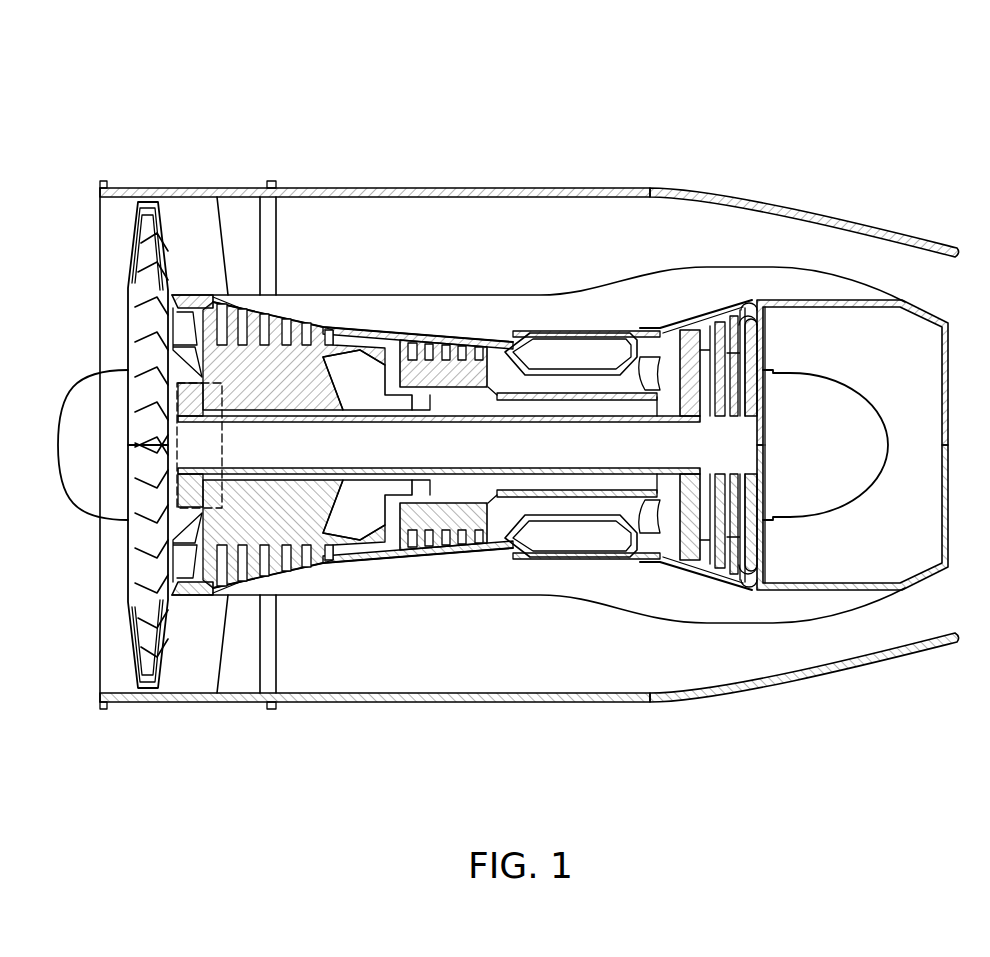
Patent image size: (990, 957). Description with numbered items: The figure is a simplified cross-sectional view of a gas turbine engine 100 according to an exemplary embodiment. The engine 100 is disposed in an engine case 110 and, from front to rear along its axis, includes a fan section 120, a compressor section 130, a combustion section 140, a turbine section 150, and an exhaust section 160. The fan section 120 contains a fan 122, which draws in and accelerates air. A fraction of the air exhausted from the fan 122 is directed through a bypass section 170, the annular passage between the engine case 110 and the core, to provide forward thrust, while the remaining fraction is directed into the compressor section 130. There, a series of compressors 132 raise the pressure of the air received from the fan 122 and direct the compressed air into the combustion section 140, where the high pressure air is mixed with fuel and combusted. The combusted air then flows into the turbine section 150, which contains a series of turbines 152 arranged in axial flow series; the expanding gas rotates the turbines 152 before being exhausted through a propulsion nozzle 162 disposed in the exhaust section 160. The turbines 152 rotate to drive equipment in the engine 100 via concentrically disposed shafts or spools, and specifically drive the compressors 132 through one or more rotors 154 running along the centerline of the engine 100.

The gas turbine engine 100 is at (763, 133).
The engine case 110 is at (317, 186).
The fan section 120 is at (53, 745).
The fan 122 is at (138, 292).
The compressor section 130 is at (442, 745).
The compressors 132 is at (296, 396).
The combustion section 140 is at (443, 745).
The turbine section 150 is at (770, 745).
The turbines 152 is at (672, 597).
The rotors 154 is at (380, 426).
The exhaust section 160 is at (772, 745).
The propulsion nozzle 162 is at (840, 253).
The bypass section 170 is at (453, 233).